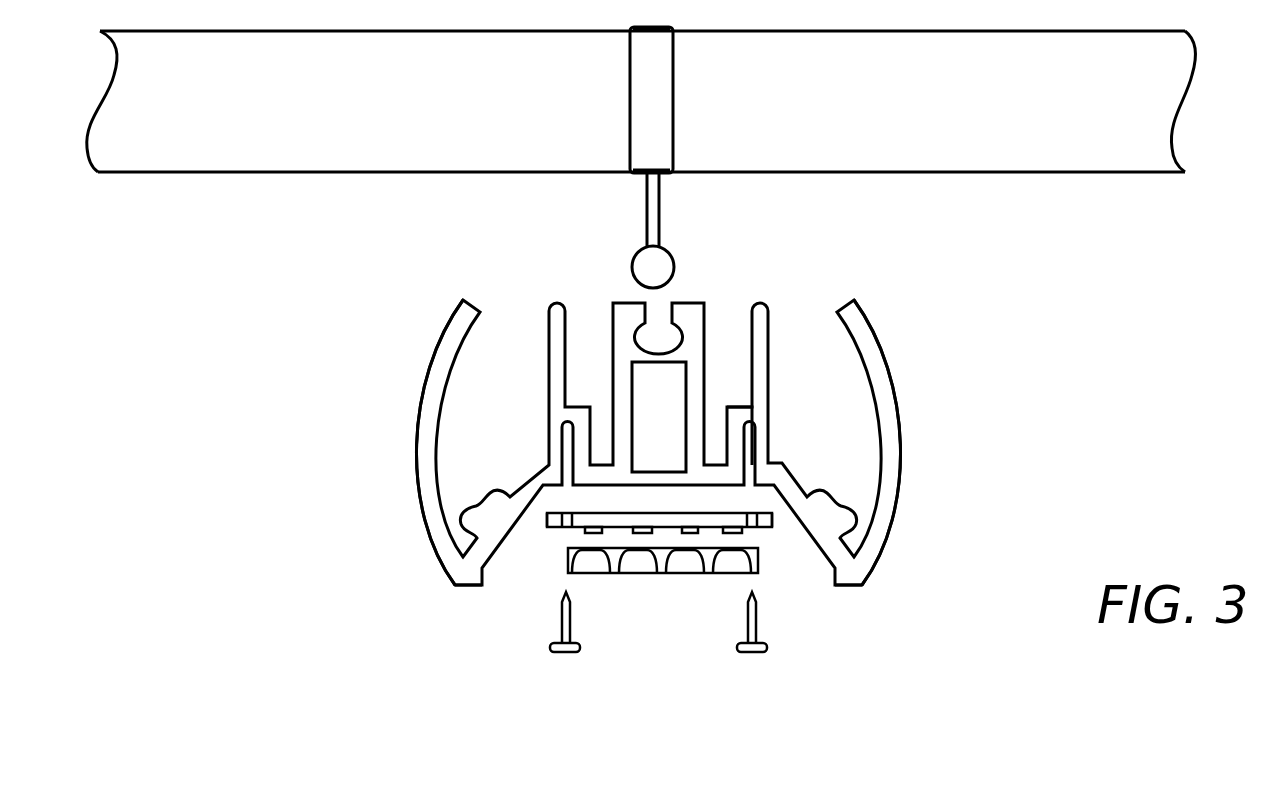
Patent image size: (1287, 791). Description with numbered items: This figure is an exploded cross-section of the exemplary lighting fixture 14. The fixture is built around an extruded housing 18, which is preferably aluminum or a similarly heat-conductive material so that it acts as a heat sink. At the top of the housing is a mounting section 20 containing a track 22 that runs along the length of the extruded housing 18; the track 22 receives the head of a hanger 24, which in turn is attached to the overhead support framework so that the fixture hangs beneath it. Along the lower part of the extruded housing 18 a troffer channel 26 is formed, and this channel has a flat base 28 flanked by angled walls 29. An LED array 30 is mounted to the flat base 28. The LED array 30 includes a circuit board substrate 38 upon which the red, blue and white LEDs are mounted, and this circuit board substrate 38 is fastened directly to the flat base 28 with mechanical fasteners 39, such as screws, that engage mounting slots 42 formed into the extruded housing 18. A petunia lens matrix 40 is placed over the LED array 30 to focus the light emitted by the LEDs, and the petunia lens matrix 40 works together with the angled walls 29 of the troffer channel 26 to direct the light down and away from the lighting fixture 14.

The lighting fixture 14 is at (395, 355).
The extruded housing 18 is at (890, 473).
The mounting section 20 is at (713, 273).
The track 22 is at (657, 333).
The hanger 24 is at (652, 213).
The troffer channel 26 is at (502, 568).
The flat base 28 is at (723, 482).
The angled walls 29 is at (823, 557).
The LED array 30 is at (547, 523).
The circuit board substrate 38 is at (585, 517).
The mechanical fasteners 39 is at (753, 652).
The petunia lens matrix 40 is at (615, 560).
The mounting slots 42 is at (750, 453).